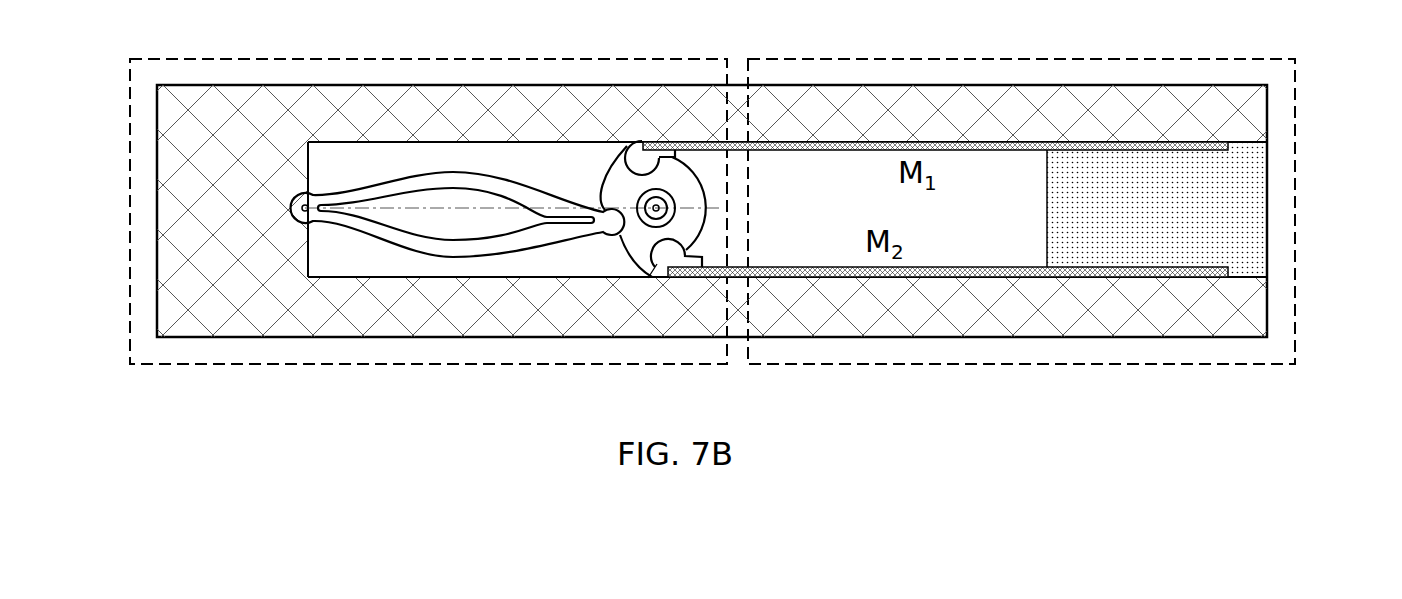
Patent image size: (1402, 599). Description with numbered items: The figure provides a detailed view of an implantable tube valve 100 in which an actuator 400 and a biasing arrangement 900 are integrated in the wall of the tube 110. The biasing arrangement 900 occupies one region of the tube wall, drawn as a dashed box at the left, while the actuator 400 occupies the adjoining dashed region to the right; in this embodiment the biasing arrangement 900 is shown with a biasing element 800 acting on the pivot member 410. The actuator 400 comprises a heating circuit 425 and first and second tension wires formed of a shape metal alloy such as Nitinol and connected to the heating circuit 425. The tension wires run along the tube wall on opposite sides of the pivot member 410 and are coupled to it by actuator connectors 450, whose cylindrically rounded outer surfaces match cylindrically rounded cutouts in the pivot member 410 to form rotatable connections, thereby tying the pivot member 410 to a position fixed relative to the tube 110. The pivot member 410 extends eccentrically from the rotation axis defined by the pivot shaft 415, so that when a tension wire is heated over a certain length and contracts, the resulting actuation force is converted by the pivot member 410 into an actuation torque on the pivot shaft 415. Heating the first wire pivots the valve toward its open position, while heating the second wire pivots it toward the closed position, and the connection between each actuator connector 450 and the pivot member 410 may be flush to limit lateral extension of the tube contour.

The biasing arrangement 900 is at (130, 92).
The actuator 400 is at (1296, 92).
The implantable tube valve 100 is at (107, 197).
The tube 110 is at (178, 290).
The heating circuit 425 is at (1233, 221).
The elastic member (spring) 800 is at (452, 248).
The pivot member 410 is at (640, 242).
The pivot shaft 415 is at (645, 195).
The actuator connector 450 is at (648, 278).